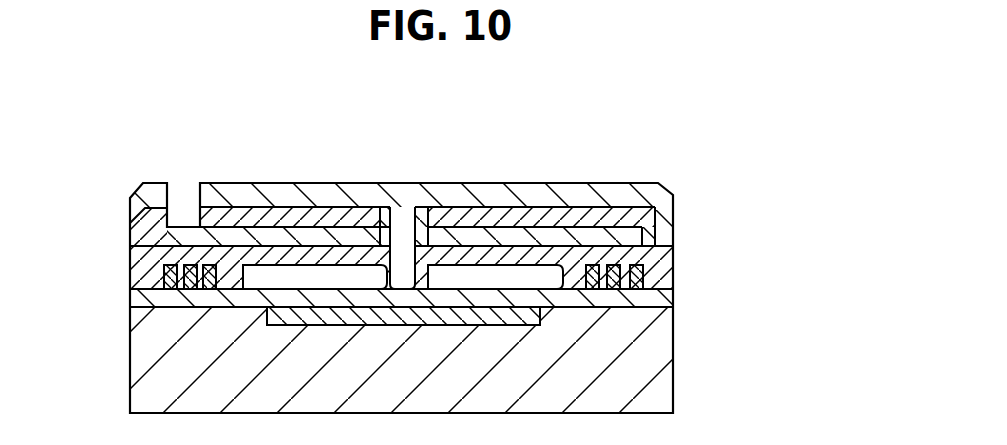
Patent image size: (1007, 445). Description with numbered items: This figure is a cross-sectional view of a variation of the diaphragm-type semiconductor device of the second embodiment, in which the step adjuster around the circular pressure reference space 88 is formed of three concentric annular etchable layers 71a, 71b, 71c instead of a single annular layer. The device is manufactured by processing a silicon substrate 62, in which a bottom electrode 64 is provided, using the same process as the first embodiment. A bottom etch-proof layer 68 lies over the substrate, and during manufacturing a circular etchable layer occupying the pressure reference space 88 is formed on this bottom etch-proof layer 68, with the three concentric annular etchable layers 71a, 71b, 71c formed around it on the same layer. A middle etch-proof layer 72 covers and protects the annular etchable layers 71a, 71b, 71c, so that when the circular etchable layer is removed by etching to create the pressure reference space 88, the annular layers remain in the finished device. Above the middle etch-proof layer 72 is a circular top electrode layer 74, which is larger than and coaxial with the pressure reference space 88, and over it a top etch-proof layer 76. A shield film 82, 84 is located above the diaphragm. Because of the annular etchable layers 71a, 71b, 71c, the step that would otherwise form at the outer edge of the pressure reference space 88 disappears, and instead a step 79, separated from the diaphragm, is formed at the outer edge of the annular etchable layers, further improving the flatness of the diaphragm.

The silicon substrate 62 is at (662, 384).
The bottom electrode 64 is at (528, 318).
The bottom etch-proof layer 68 is at (655, 298).
The first concentric annular etchable layer 71a is at (643, 262).
The second concentric annular etchable layer 71b is at (620, 276).
The third concentric annular etchable layer 71c is at (598, 281).
The middle etch-proof layer 72 is at (660, 255).
The top electrode layer 74 is at (600, 238).
The top etch-proof layer 76 is at (668, 227).
The step 79 is at (684, 172).
The shield film 82 is at (401, 232).
The shield film 84 is at (457, 193).
The pressure reference space 88 is at (292, 277).